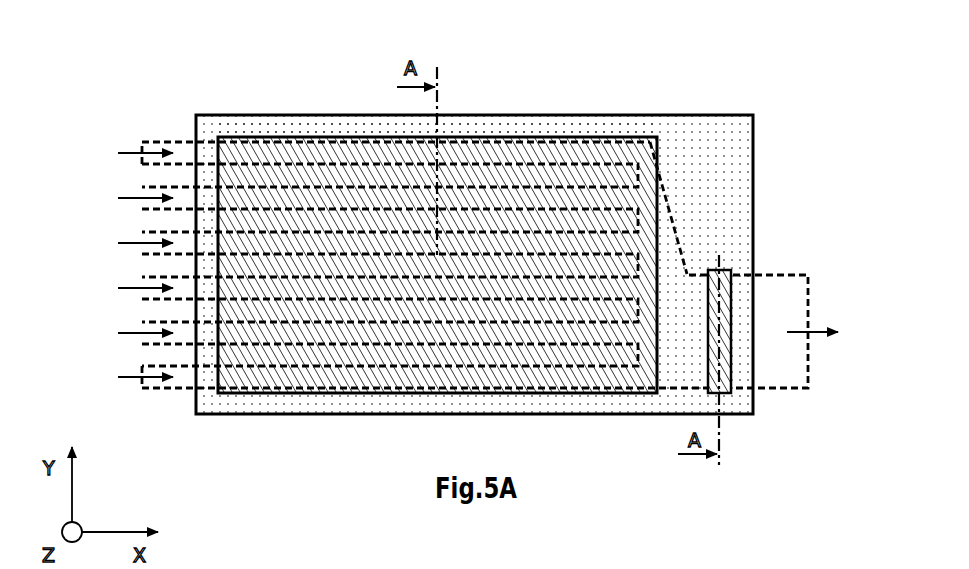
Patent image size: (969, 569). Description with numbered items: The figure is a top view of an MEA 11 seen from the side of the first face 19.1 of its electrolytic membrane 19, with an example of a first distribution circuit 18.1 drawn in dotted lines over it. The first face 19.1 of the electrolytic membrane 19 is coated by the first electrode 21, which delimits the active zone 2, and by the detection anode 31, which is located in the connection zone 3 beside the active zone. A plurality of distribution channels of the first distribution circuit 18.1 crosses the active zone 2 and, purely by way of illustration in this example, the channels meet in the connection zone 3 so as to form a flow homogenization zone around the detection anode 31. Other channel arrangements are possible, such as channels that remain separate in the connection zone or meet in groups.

The MEA 11 is at (138, 88).
The electrolytic membrane 19 is at (268, 113).
The first face 19.1 is at (333, 128).
The active zone 2 is at (478, 209).
The first electrode 21 is at (565, 153).
The connection zone 3 is at (708, 101).
The first distribution circuit 18.1 is at (678, 232).
The detection anode 31 is at (731, 312).